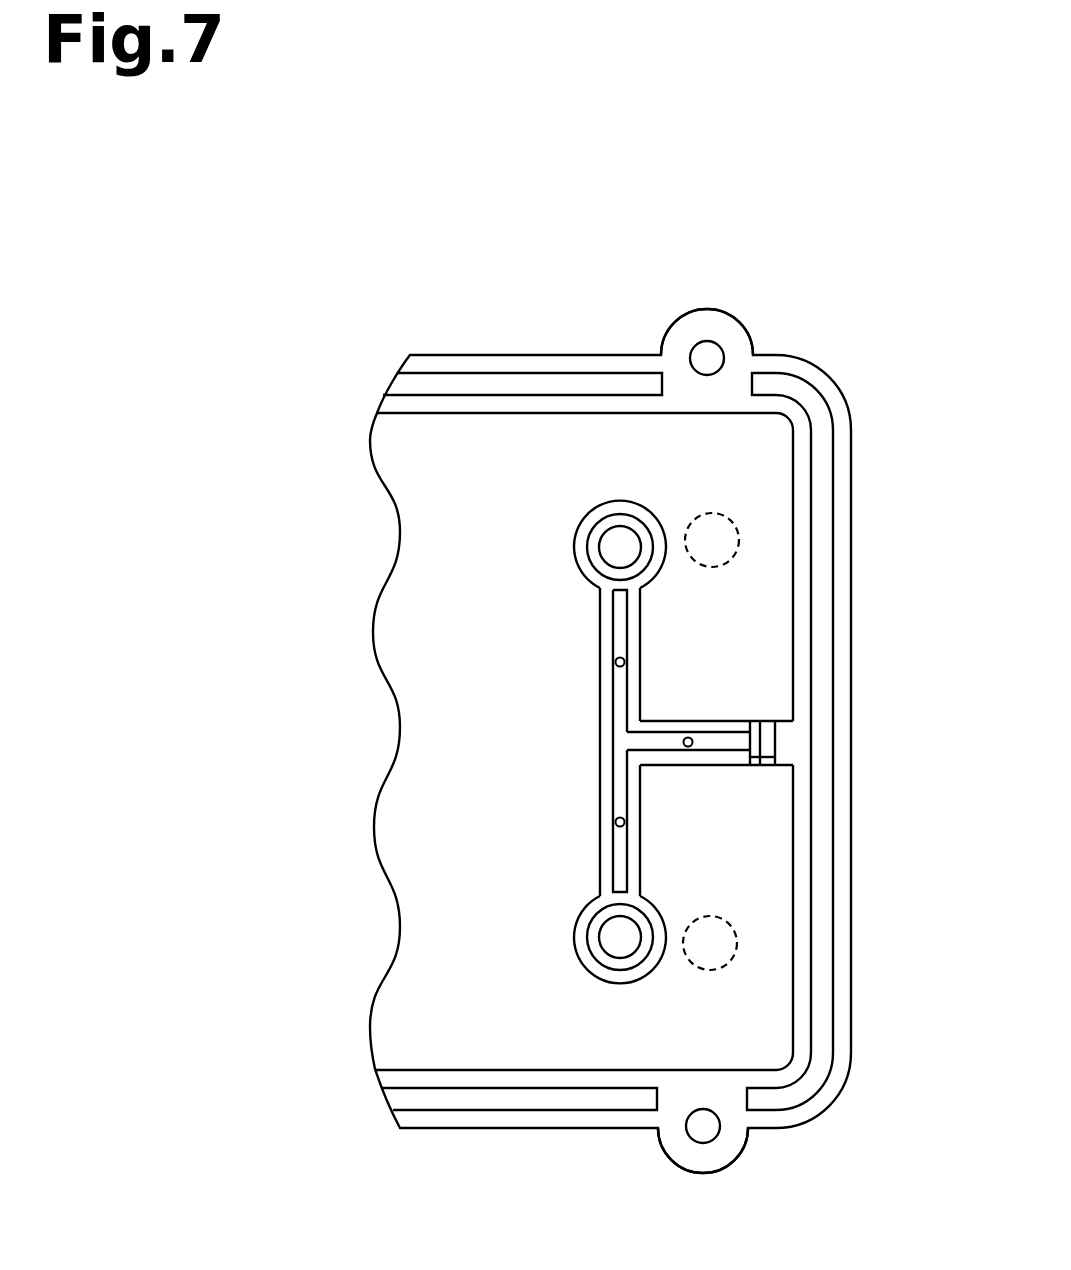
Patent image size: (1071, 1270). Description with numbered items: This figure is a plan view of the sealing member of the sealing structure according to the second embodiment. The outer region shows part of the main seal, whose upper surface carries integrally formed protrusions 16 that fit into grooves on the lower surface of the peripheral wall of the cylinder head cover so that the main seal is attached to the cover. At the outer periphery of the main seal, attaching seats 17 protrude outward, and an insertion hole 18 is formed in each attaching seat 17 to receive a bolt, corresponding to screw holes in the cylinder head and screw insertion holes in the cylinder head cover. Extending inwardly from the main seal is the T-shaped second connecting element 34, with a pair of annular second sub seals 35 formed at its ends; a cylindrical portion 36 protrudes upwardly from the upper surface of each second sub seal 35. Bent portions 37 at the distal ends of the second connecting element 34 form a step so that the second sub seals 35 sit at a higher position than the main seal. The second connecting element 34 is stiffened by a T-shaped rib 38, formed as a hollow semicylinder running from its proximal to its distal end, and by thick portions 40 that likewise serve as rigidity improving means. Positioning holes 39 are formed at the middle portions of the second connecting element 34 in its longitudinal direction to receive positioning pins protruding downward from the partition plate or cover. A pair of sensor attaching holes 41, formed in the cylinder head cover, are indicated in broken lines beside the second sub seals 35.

The protrusion 16 is at (825, 600).
The attaching seat 17 is at (676, 322).
The insertion hole 18 is at (724, 356).
The second connecting element 34 is at (599, 693).
The second sub seal 35 is at (597, 507).
The cylindrical portion 36 is at (600, 573).
The bent portion 37 is at (785, 725).
The rib 38 is at (612, 753).
The positioning hole 39 is at (688, 737).
The thick portion 40 is at (752, 757).
The sensor attaching hole 41 is at (700, 562).